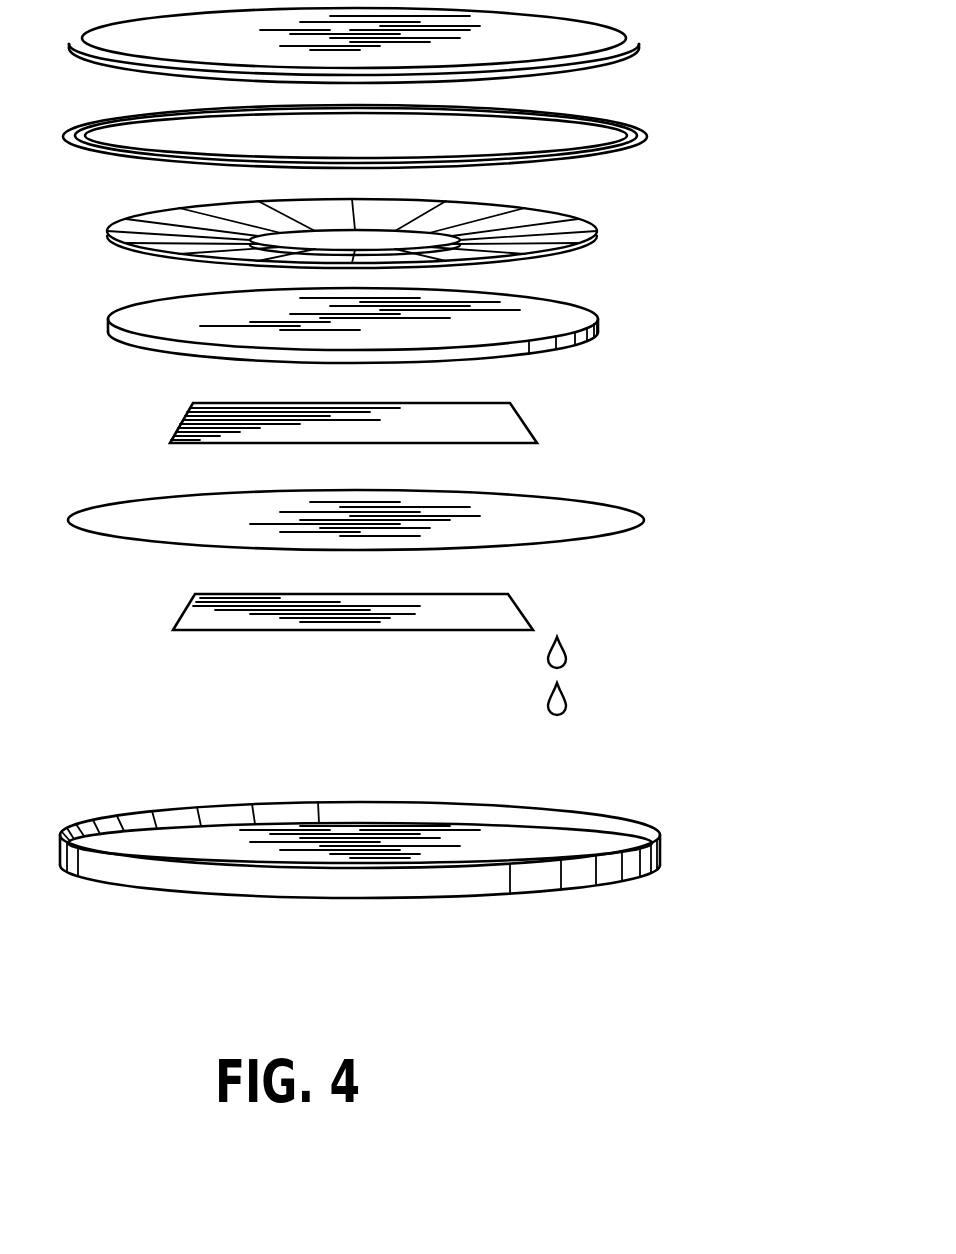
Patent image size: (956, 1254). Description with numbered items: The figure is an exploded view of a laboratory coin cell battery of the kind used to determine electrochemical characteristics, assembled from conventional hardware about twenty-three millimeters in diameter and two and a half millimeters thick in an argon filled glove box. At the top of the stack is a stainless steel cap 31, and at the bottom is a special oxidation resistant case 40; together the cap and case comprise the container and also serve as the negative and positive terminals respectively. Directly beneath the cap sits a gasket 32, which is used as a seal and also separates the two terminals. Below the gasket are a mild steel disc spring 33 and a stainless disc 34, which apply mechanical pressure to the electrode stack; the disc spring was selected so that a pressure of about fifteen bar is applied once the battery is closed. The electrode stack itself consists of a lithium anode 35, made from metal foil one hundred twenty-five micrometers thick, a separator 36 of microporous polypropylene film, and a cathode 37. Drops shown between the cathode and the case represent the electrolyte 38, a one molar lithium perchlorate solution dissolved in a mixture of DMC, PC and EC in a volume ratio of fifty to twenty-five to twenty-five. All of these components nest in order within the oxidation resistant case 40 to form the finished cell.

The stainless steel cap 31 is at (668, 47).
The gasket 32 is at (675, 135).
The mild steel disc spring 33 is at (647, 215).
The stainless disc 34 is at (643, 323).
The lithium anode 35 is at (618, 417).
The separator 36 is at (675, 517).
The cathode 37 is at (608, 608).
The electrolyte 38 is at (603, 662).
The oxidation resistant case 40 is at (680, 848).